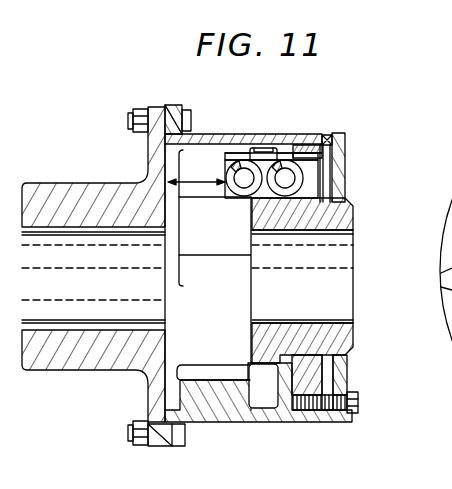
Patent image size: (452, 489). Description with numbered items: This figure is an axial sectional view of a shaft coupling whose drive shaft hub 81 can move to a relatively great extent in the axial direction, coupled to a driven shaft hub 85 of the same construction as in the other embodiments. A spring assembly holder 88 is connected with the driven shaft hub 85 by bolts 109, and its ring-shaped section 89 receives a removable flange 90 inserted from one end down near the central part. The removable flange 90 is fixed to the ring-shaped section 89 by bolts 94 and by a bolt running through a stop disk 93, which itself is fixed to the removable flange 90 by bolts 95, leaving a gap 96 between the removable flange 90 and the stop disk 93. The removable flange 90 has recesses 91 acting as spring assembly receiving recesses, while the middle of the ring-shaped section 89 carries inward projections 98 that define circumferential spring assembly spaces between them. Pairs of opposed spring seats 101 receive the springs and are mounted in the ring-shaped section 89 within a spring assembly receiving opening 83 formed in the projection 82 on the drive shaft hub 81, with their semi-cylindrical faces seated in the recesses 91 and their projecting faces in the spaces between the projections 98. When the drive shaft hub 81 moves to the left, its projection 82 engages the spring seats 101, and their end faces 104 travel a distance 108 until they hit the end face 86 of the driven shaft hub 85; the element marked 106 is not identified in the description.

The drive shaft hub 81 is at (348, 210).
The projection 82 is at (262, 149).
The spring assembly receiving opening 83 is at (294, 154).
The driven shaft hub 85 is at (75, 190).
The end face 86 is at (166, 158).
The spring assembly holder 88 is at (252, 133).
The ring-shaped section 89 is at (265, 147).
The removable flange 90 is at (325, 150).
The recesses 91 is at (327, 163).
The stop disk 93 is at (340, 184).
The bolts 94 is at (328, 133).
The bolts 95 is at (358, 403).
The gap 96 is at (312, 384).
The projections 98 is at (236, 152).
The spring seat 101 is at (340, 231).
The end faces 104 is at (228, 192).
The shaft 106 is at (293, 192).
The distance 108 is at (203, 180).
The bolts 109 is at (140, 110).